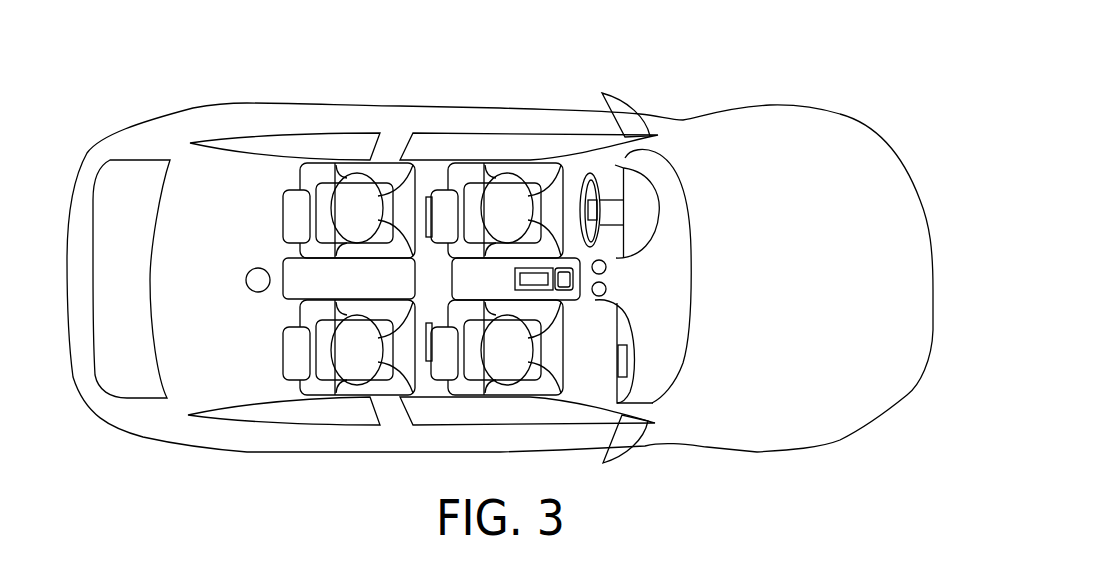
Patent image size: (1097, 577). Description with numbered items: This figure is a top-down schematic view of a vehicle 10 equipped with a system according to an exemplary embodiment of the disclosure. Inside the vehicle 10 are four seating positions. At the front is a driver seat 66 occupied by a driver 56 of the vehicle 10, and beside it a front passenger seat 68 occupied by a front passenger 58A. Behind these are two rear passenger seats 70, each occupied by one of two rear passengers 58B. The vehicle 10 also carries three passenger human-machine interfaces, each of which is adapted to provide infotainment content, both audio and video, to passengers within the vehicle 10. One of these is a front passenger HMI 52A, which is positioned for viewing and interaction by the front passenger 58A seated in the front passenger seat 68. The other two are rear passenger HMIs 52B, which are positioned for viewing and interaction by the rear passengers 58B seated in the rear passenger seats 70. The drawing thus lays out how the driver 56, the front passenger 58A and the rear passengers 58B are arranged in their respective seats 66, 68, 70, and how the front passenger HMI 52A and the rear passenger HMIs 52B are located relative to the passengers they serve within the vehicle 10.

The vehicle 10 is at (818, 287).
The driver 56 is at (522, 219).
The front passenger 58A is at (531, 363).
The rear passengers 58B is at (378, 219).
The front passenger HMI 52A is at (623, 362).
The rear passenger HMIs 52B is at (430, 188).
The driver seat 66 is at (543, 173).
The front passenger seat 68 is at (542, 385).
The rear passenger seats 70 is at (392, 173).